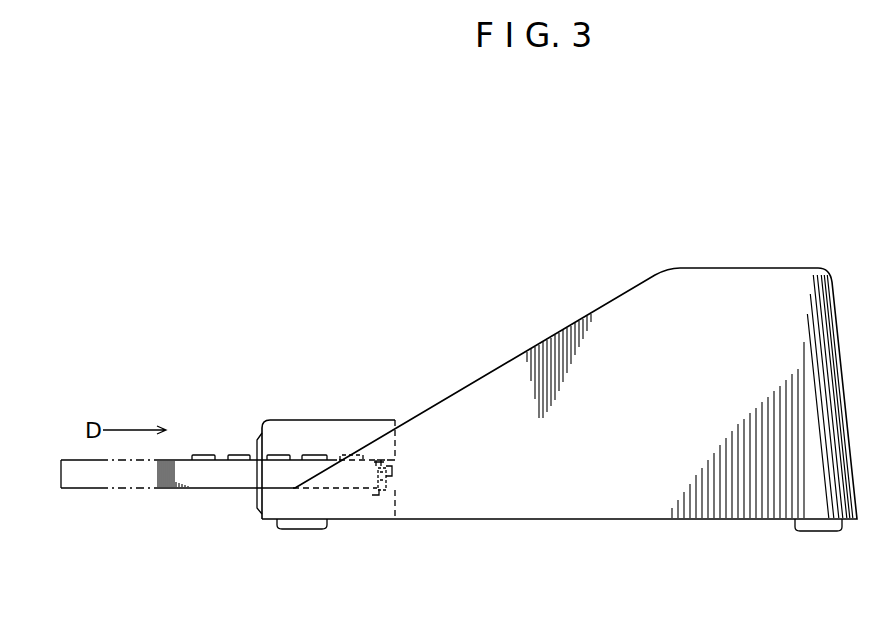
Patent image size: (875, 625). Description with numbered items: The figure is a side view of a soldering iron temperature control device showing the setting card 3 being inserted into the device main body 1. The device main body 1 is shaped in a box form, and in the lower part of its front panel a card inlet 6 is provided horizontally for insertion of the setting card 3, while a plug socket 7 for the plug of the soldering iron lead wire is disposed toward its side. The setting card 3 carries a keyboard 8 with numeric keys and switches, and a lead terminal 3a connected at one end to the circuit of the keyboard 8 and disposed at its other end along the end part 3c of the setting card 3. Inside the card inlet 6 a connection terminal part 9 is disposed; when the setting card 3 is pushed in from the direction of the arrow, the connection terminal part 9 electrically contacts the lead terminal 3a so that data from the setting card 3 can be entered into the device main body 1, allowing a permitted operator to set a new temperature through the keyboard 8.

The device main body 1 is at (596, 287).
The setting card 3 is at (178, 488).
The lead terminal 3a is at (378, 477).
The end part 3c is at (378, 463).
The card inlet 6 is at (363, 460).
The plug socket 7 is at (305, 432).
The keyboard 8 is at (246, 443).
The connection terminal part 9 is at (388, 470).